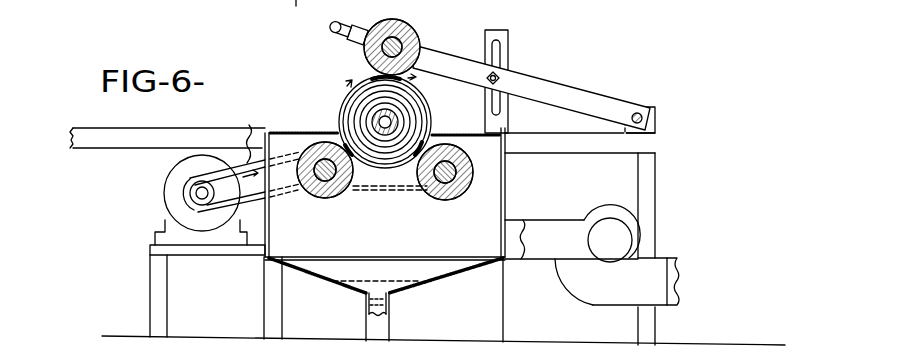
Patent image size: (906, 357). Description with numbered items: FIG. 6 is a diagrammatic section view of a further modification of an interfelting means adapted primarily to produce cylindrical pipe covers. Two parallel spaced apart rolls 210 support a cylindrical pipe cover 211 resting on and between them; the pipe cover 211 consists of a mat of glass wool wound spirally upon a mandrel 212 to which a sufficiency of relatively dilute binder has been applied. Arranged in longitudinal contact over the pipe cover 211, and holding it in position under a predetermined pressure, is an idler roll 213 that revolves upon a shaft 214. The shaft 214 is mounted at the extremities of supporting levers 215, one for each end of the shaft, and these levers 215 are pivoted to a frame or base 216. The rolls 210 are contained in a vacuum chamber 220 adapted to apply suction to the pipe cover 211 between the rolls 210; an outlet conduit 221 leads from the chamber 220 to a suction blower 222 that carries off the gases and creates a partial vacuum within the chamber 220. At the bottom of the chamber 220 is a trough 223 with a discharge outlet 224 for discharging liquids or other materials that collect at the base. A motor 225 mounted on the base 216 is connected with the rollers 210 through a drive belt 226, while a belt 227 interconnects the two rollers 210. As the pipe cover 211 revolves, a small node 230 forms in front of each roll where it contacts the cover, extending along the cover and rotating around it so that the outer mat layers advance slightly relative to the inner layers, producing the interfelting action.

The rolls 210 is at (322, 198).
The cylindrical pipe cover 211 is at (339, 115).
The mandrel 212 is at (375, 116).
The idler roll 213 is at (404, 40).
The shaft 214 is at (405, 28).
The supporting levers 215 is at (534, 86).
The frame or base 216 is at (144, 141).
The vacuum chamber 220 is at (421, 248).
The outlet conduit 221 is at (513, 261).
The suction blower 222 is at (575, 294).
The trough 223 is at (423, 285).
The discharge outlet 224 is at (389, 307).
The motor 225 is at (168, 193).
The drive belt 226 is at (224, 136).
The belt 227 is at (378, 192).
The node 230 is at (410, 78).